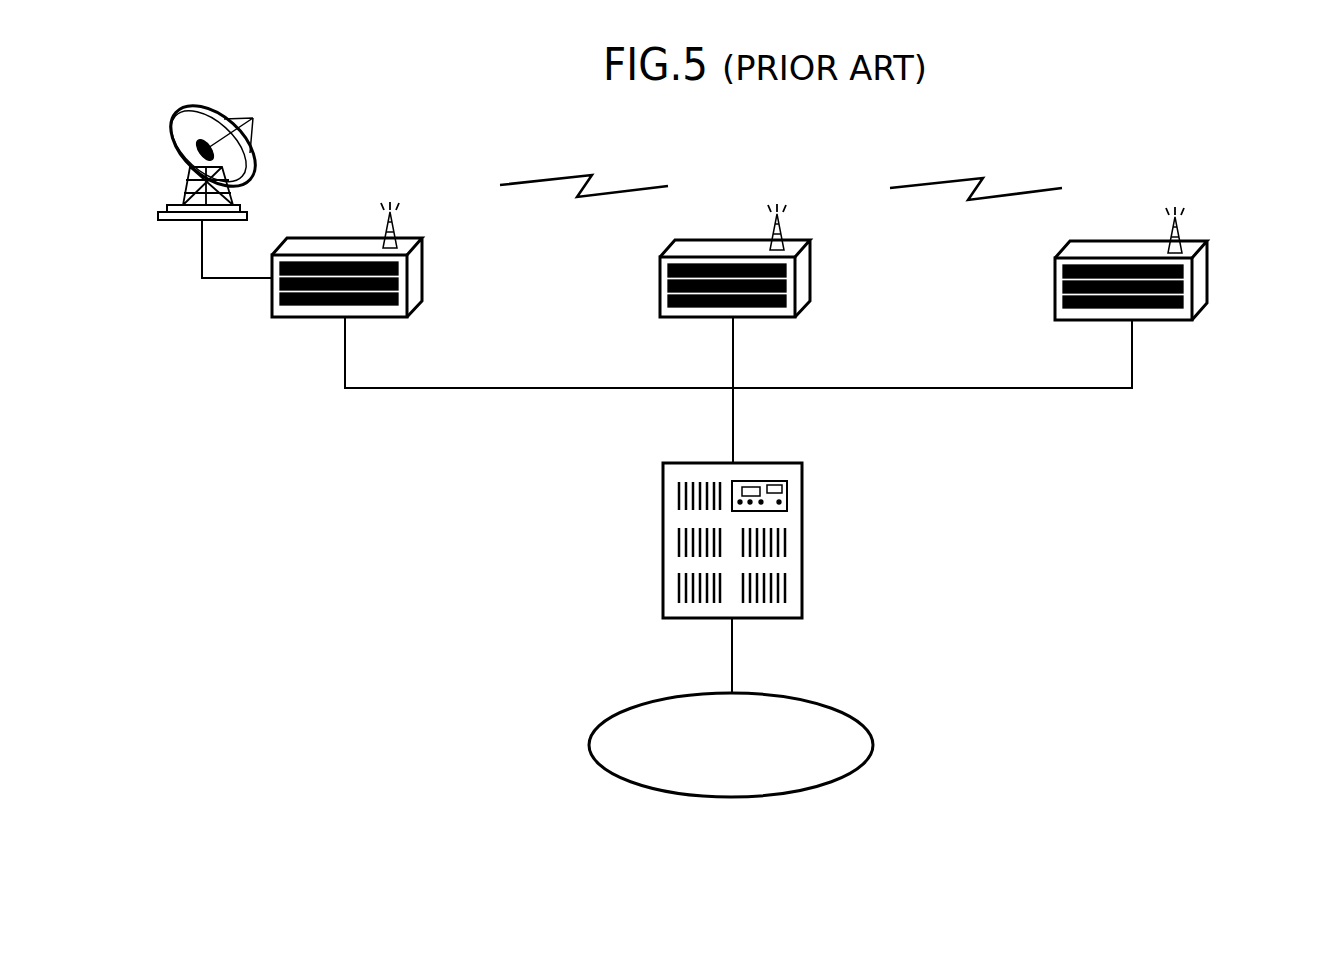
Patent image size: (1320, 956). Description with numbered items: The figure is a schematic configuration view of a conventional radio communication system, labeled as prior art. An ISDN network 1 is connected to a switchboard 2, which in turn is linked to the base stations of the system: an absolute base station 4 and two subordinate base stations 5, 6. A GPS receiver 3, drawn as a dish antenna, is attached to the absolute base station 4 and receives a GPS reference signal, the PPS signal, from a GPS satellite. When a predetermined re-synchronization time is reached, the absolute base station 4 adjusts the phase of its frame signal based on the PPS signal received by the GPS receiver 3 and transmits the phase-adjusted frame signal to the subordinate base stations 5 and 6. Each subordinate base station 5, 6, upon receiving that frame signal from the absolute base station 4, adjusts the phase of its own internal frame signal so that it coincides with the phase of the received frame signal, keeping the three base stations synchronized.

The ISDN network 1 is at (728, 798).
The switchboard 2 is at (802, 540).
The GPS receiver 3 is at (255, 118).
The absolute base station 4 is at (423, 273).
The subordinate base station 5 is at (810, 275).
The subordinate base station 6 is at (1210, 277).